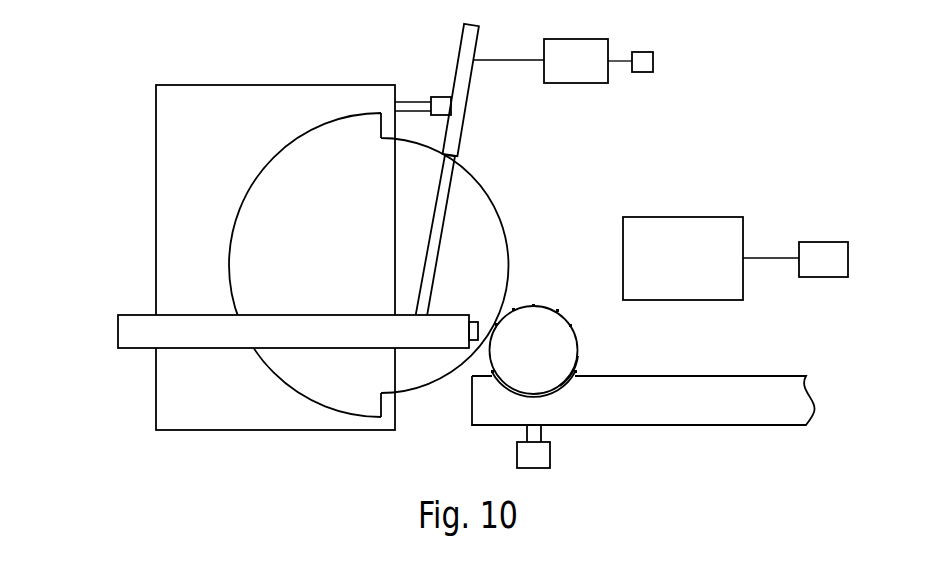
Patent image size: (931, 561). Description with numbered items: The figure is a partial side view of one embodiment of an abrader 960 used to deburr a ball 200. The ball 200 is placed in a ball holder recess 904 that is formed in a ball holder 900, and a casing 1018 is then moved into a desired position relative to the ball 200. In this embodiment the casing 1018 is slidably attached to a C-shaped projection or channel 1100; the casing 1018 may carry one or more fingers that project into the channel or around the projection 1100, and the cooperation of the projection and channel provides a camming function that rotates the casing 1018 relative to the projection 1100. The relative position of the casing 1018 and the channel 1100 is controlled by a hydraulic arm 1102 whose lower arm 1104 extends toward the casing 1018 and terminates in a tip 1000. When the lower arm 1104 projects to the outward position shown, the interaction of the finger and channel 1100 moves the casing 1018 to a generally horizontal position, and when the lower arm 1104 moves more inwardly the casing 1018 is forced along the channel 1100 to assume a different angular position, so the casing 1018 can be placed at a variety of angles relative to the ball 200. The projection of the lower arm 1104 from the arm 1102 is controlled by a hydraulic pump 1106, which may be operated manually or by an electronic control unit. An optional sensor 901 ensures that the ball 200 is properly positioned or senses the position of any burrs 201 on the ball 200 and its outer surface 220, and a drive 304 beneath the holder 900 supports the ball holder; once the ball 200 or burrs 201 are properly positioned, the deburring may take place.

The abrader 960 is at (377, 227).
The C-shaped projection or channel 1100 is at (246, 200).
The hydraulic arm 1102 is at (465, 119).
The lower arm 1104 is at (440, 238).
The hydraulic pump 1106 is at (573, 84).
The casing 1018 is at (127, 350).
The probe tip 1000 is at (477, 319).
The ball 200 is at (571, 313).
The burrs 201 is at (553, 312).
The outer surface 220 is at (578, 356).
The ball holder recess 904 is at (560, 391).
The platform 900 is at (789, 376).
The sensor 901 is at (703, 216).
The drive 304 is at (569, 461).